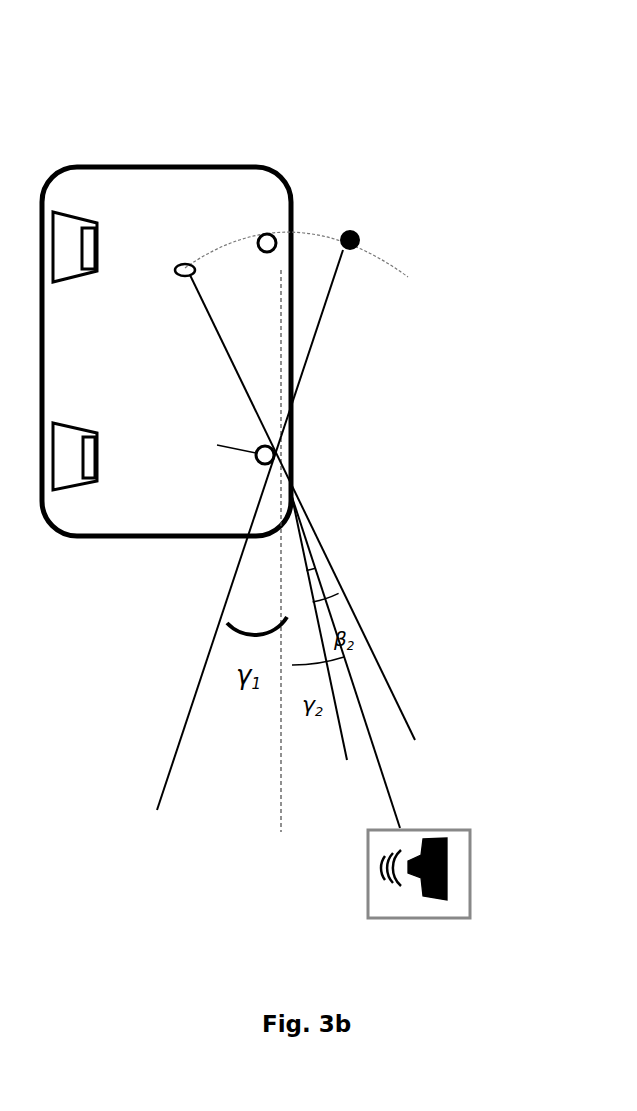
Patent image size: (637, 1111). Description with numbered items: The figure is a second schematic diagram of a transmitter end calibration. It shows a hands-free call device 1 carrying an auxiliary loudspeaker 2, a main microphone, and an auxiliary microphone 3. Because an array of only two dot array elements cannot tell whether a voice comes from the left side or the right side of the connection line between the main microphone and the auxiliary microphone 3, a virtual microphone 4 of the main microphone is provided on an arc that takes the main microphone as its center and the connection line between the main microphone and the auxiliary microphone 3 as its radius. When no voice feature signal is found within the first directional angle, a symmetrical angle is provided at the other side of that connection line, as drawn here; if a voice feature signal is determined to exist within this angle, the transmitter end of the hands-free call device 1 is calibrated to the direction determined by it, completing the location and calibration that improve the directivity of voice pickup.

The hands-free call device 1 is at (227, 195).
The auxiliary loudspeaker 2 is at (95, 199).
The auxiliary microphone 3 is at (298, 198).
The virtual microphone of a main microphone 4 is at (365, 225).